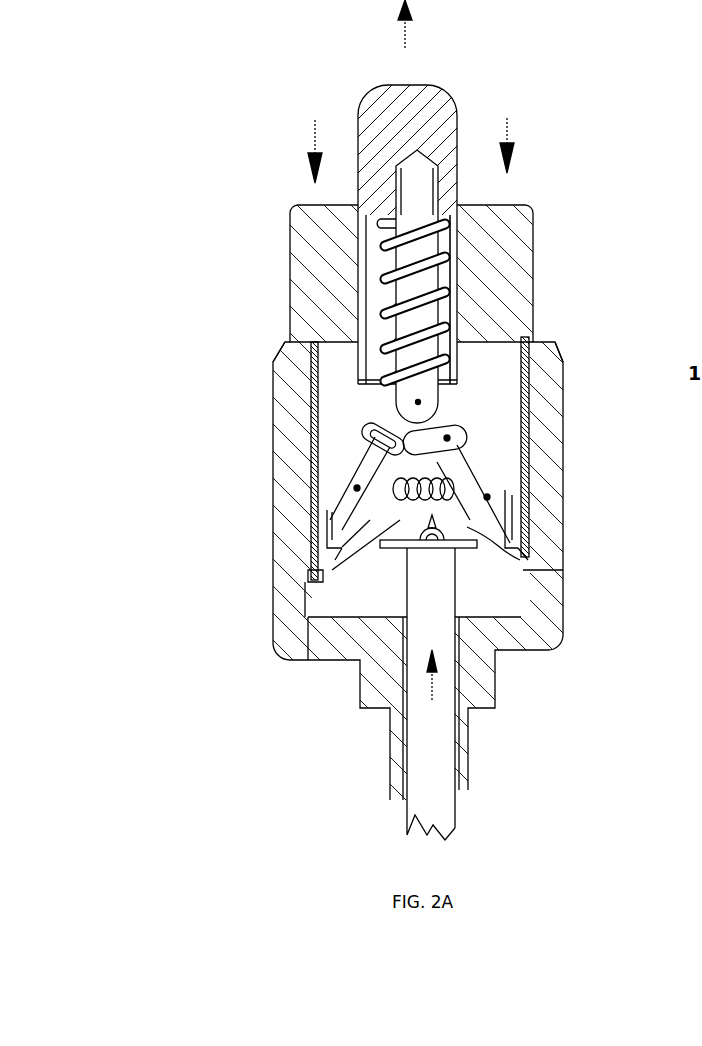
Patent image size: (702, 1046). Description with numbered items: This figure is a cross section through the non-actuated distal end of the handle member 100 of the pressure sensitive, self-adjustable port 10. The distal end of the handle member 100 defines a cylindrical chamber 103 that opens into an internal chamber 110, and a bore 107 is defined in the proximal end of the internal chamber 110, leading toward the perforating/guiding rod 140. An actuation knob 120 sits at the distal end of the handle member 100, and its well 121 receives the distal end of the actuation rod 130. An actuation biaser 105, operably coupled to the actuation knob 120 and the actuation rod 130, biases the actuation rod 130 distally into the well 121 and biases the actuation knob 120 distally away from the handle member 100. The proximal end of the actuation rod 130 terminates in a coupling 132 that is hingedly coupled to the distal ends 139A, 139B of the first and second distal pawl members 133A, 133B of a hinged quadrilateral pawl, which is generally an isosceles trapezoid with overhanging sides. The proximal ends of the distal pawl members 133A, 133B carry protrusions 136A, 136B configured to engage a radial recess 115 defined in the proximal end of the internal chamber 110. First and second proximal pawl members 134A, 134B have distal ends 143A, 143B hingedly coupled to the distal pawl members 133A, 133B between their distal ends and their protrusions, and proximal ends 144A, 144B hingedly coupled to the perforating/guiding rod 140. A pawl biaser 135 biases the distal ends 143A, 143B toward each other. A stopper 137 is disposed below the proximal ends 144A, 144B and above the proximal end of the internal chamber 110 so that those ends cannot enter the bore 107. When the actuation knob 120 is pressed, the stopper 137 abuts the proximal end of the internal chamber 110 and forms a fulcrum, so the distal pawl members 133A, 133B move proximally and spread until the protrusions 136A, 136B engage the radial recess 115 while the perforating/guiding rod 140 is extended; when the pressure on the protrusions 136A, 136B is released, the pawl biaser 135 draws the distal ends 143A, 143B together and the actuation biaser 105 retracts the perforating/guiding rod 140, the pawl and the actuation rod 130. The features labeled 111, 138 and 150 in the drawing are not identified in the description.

The pressure sensitive, self-adjustable port 10 is at (227, 308).
The handle member 100 is at (297, 373).
The cylindrical chamber 103 is at (453, 267).
The actuation biaser 105 is at (410, 286).
The bore 107 is at (460, 627).
The internal chamber 110 is at (343, 419).
The flange 111 is at (303, 342).
The radial recess 115 is at (315, 595).
The actuation knob 120 is at (452, 170).
The well 121 is at (398, 183).
The actuation rod 130 is at (372, 222).
The coupling 132 is at (437, 397).
The first distal pawl member 133A is at (470, 458).
The second distal pawl member 133B is at (360, 470).
The first proximal pawl member 134A is at (465, 510).
The second proximal pawl member 134B is at (380, 510).
The pawl biaser 135 is at (417, 490).
The protrusion 136A is at (508, 533).
The protrusion 136B is at (327, 548).
The stopper 137 is at (467, 540).
The valve member 138 is at (428, 510).
The distal end of first distal pawl member 139A is at (447, 420).
The distal end of second distal pawl member 139B is at (410, 402).
The perforating/guiding rod 140 is at (423, 788).
The distal end of first proximal pawl member 143A is at (487, 497).
The distal end of second proximal pawl member 143B is at (357, 488).
The proximal end of first proximal pawl member 144A is at (513, 563).
The proximal end of second proximal pawl member 144B is at (330, 570).
The cap wall 150 is at (490, 273).